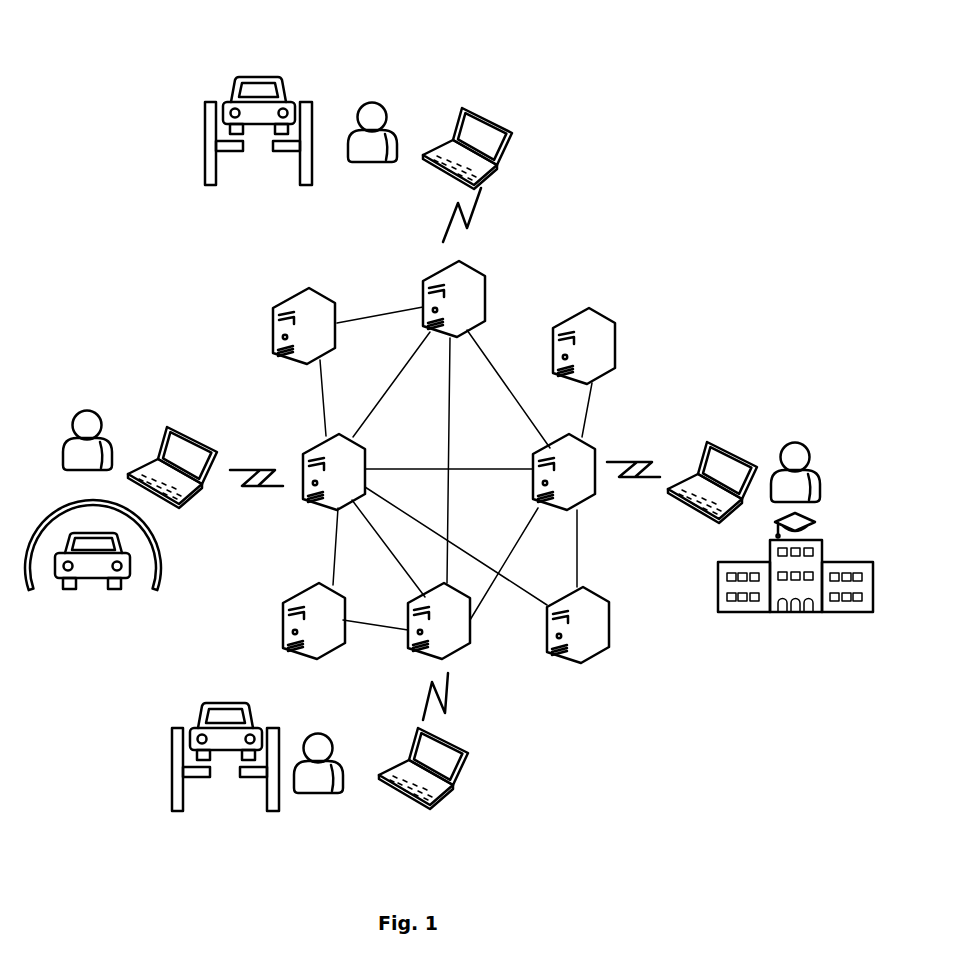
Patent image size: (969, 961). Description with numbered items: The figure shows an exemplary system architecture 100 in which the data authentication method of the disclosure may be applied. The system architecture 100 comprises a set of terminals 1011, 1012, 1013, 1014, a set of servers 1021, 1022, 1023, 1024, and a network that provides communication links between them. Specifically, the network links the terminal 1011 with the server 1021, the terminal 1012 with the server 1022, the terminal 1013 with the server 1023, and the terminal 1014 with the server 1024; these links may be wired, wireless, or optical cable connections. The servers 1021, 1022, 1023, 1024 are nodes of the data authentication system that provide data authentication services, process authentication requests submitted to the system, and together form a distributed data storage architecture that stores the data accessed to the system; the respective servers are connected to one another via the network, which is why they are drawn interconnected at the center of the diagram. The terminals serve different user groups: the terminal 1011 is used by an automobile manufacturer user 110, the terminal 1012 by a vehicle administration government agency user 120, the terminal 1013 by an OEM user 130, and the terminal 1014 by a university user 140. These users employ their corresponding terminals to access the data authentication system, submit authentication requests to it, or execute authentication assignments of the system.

The system architecture 100 is at (735, 30).
The automobile manufacturer user 110 is at (372, 149).
The vehicle administration government agency user 120 is at (87, 452).
The OEM user 130 is at (812, 473).
The university user 140 is at (318, 779).
The terminal 1011 is at (489, 148).
The terminal 1012 is at (172, 477).
The terminal 1013 is at (712, 491).
The terminal 1014 is at (423, 779).
The server 1021 is at (480, 299).
The server 1022 is at (323, 482).
The server 1023 is at (576, 475).
The server 1024 is at (450, 628).